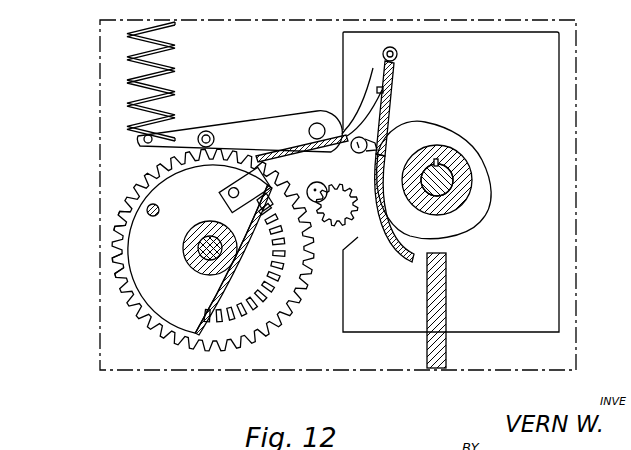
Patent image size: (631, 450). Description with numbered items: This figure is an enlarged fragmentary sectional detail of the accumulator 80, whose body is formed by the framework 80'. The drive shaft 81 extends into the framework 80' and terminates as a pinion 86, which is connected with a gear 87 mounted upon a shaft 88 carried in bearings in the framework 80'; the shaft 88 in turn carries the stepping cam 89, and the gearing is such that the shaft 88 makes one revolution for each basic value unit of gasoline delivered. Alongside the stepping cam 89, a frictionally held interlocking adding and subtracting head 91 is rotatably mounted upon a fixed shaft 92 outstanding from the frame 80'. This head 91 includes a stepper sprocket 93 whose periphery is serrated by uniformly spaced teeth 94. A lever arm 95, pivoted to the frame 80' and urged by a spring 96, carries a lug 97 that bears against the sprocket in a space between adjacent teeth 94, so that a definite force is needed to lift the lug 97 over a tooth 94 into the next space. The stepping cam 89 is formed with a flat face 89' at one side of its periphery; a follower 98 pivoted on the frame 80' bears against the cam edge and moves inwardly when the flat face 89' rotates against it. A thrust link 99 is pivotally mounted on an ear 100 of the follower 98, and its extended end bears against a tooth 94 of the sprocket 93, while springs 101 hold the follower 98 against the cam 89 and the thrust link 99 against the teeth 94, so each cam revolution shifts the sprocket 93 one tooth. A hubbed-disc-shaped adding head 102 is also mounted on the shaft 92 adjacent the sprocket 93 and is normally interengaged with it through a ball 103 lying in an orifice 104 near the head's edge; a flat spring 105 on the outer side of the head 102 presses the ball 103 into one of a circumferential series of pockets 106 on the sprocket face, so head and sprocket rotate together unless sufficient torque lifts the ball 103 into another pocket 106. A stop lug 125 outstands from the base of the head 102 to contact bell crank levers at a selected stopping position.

The accumulator 80 is at (299, 195).
The framework 80' is at (481, 182).
The drive shaft 81 is at (321, 203).
The pinion 86 is at (337, 217).
The gear 87 is at (366, 192).
The shaft 88 is at (450, 176).
The stepping cam 89 is at (446, 195).
The flat face 89' is at (440, 136).
The adding and subtracting head 91 is at (110, 199).
The fixed shaft 92 is at (200, 247).
The stepper sprocket 93 is at (118, 242).
The teeth 94 is at (110, 276).
The lever arm 95 is at (239, 119).
The spring 96 is at (182, 27).
The lug 97 is at (206, 124).
The follower 98 is at (390, 96).
The thrust link 99 is at (298, 144).
The ear 100 is at (368, 139).
The springs 101 is at (374, 75).
The adding head 102 is at (172, 300).
The ball 103 is at (262, 217).
The orifice 104 is at (232, 191).
The flat spring 105 is at (273, 205).
The pockets 106 is at (280, 298).
The stop lug 125 is at (151, 204).